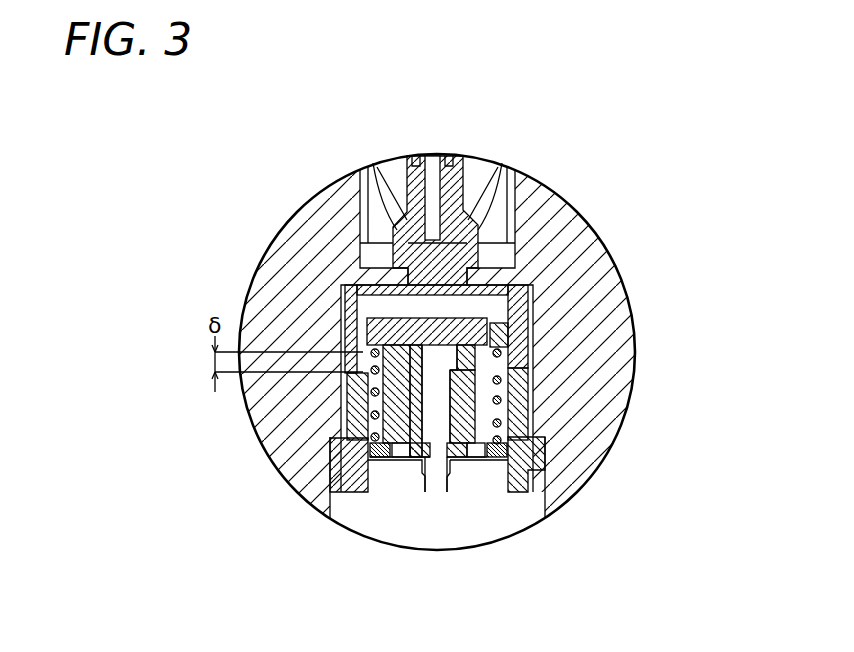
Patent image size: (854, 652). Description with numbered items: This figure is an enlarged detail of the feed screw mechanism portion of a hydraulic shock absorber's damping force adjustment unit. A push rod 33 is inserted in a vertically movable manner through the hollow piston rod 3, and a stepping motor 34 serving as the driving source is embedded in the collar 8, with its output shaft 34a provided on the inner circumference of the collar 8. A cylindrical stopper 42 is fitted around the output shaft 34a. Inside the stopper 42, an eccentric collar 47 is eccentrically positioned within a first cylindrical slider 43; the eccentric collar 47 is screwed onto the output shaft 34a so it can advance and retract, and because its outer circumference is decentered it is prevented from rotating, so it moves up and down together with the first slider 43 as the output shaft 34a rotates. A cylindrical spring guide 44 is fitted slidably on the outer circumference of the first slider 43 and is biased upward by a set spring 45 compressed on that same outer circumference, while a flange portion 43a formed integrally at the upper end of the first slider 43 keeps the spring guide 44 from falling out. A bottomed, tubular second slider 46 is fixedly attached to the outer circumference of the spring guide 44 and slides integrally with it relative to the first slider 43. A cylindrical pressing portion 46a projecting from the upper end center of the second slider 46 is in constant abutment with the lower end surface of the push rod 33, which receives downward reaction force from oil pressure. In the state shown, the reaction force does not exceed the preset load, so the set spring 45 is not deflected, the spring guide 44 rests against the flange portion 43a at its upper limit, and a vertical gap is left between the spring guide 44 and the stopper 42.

The piston rod 3 is at (490, 178).
The collar 8 is at (630, 292).
The push rod 33 is at (437, 152).
The stepping motor 34 is at (525, 522).
The output shaft 34a is at (430, 398).
The stopper 42 is at (532, 396).
The first slider 43 is at (347, 334).
The flange portion 43a is at (527, 285).
The spring guide 44 is at (528, 300).
The set spring 45 is at (512, 357).
The second slider 46 is at (347, 288).
The pressing portion 46a is at (372, 162).
The eccentric collar 47 is at (468, 448).